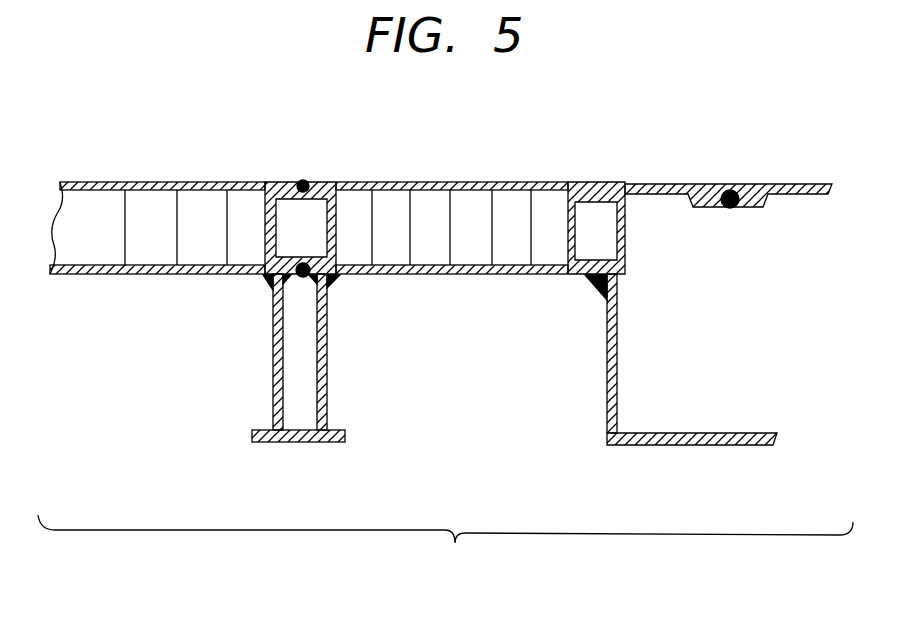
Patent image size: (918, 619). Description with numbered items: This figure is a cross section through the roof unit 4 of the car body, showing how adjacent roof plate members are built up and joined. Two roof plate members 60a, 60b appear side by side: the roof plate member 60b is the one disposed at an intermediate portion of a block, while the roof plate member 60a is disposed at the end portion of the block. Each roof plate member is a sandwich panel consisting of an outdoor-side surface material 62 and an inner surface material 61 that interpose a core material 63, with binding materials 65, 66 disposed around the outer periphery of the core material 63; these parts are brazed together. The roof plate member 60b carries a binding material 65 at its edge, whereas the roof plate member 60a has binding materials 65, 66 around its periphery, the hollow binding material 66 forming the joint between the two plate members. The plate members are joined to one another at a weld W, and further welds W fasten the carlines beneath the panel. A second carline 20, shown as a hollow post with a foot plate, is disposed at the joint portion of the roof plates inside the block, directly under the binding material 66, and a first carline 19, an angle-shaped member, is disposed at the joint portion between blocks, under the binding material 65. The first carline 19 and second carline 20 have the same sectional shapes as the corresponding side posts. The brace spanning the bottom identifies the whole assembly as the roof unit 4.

The roof unit 4 is at (445, 548).
The first carline 19 is at (638, 448).
The second carline 20 is at (295, 445).
The roof plate member 60a is at (540, 205).
The roof plate member 60b is at (95, 200).
The surface material 61 is at (432, 276).
The surface material 62 is at (442, 205).
The core material 63 is at (520, 262).
The binding material 65 is at (620, 186).
The binding material 66 is at (275, 183).
The weld W is at (305, 182).